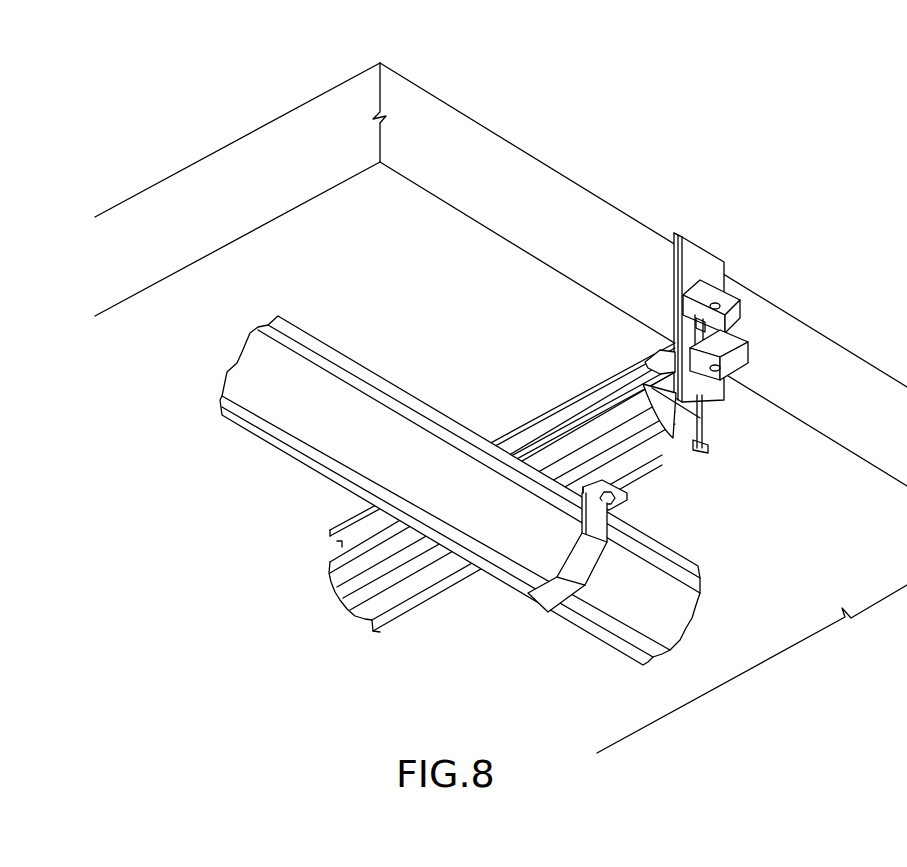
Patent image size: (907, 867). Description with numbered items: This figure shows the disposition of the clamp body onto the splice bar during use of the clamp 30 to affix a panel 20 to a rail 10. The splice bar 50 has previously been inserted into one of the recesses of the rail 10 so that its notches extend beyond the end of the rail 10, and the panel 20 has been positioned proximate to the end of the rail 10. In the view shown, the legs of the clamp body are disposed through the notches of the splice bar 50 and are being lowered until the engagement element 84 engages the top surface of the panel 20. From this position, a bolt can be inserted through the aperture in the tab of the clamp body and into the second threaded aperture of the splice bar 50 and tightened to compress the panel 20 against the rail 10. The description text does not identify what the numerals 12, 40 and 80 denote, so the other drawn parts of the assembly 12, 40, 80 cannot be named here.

The rail 10 is at (673, 478).
The cross rail 12 is at (460, 490).
The panel 20 is at (588, 208).
The clamp 30 is at (727, 206).
The hanger strap 40 is at (577, 546).
The splice bar 50 is at (736, 372).
The mounting plate 80 is at (712, 271).
The engagement element 84 is at (677, 232).